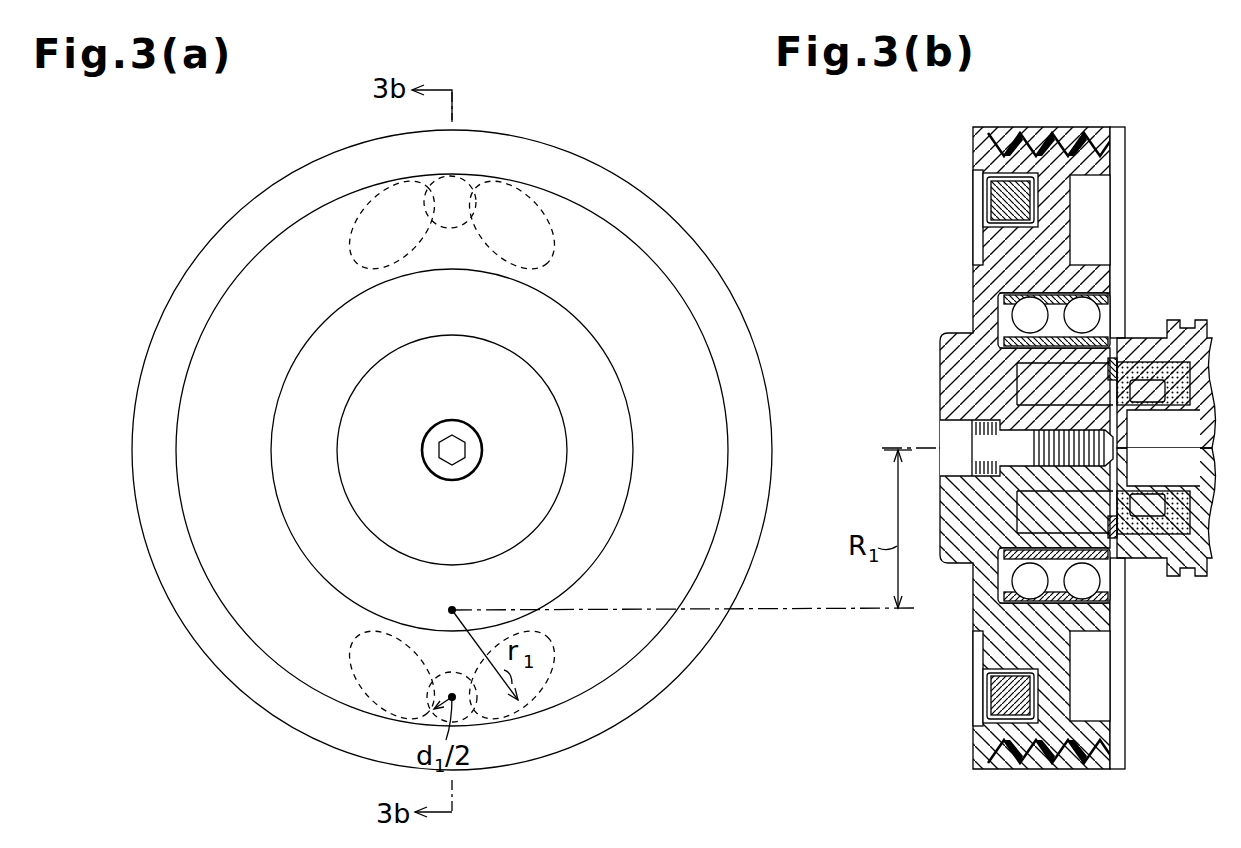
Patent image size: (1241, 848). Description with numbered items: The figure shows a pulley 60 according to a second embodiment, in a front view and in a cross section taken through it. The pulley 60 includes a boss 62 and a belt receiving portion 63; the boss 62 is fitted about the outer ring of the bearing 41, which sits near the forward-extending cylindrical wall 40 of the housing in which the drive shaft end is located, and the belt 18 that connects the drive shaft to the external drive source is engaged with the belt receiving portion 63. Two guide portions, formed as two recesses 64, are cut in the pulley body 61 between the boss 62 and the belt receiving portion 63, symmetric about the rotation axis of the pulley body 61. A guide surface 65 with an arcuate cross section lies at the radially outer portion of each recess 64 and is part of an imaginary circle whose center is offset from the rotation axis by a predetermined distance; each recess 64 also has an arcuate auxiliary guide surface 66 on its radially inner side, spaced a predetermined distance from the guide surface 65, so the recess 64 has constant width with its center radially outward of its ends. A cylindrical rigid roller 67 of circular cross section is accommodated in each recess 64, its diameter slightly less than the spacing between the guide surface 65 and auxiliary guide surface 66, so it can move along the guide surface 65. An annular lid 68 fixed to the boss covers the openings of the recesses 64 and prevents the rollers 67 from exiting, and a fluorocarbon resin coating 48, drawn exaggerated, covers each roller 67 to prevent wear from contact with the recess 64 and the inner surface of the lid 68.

In FIG. 3B, the belt 18 is at (1037, 758).
In FIG. 3B, the cylindrical wall 40 is at (1133, 348).
In FIG. 3B, the bearing 41 is at (1100, 315).
In FIG. 3B, the fluorocarbon resin coating 48 is at (1010, 173).
In FIG. 3A, the pulley 60 is at (452, 450).
In FIG. 3B, the pulley 60 is at (1127, 190).
In FIG. 3A, the pulley body 61 is at (695, 240).
In FIG. 3B, the pulley body 61 is at (1127, 230).
In FIG. 3B, the boss 62 is at (1095, 273).
In FIG. 3A, the belt receiving portion 63 is at (722, 292).
In FIG. 3B, the belt receiving portion 63 is at (978, 152).
In FIG. 3A, the recess 64 is at (548, 261).
In FIG. 3B, the recess 64 is at (1025, 247).
In FIG. 3A, the guide surface 65 is at (524, 196).
In FIG. 3B, the guide surface 65 is at (988, 187).
In FIG. 3A, the auxiliary guide surface 66 is at (480, 240).
In FIG. 3B, the auxiliary guide surface 66 is at (1028, 222).
In FIG. 3A, the roller 67 is at (423, 210).
In FIG. 3B, the roller 67 is at (997, 215).
In FIG. 3A, the lid 68 is at (718, 386).
In FIG. 3B, the lid 68 is at (975, 253).